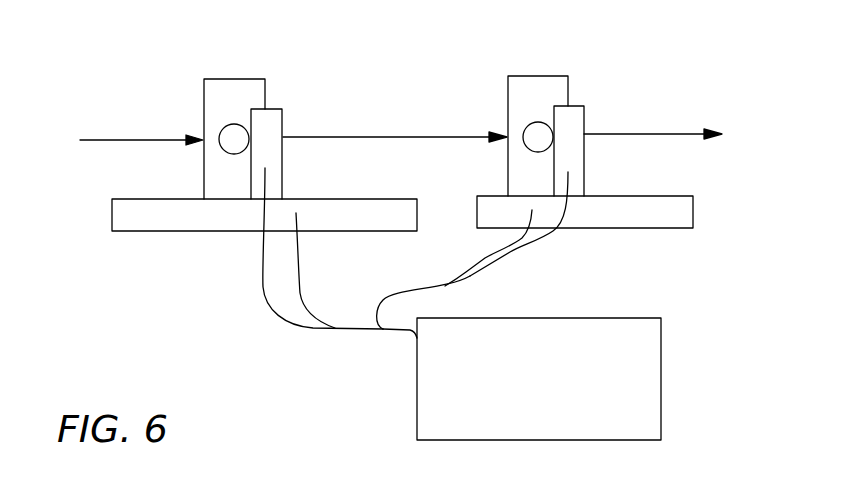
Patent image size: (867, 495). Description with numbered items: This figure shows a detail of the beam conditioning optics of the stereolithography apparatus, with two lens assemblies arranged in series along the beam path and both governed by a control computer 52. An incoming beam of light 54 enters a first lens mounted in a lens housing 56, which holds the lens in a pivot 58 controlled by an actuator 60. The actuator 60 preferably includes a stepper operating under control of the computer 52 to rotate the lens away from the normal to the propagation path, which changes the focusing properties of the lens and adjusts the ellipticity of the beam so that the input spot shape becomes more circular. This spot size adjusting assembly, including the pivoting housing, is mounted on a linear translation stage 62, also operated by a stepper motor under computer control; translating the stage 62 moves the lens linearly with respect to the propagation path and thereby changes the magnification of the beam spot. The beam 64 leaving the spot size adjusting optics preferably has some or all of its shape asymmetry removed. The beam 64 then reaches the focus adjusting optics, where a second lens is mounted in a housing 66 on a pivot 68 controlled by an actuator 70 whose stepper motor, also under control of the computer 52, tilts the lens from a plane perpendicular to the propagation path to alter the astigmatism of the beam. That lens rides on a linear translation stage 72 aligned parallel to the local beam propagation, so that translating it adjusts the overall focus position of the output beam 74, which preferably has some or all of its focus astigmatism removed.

The computer 52 is at (645, 427).
The beam of light 54 is at (127, 139).
The lens housing 56 is at (220, 105).
The pivot 58 is at (232, 138).
The actuator 60 is at (278, 115).
The linear translation stage 62 is at (173, 215).
The beam 64 is at (400, 136).
The housing 66 is at (523, 103).
The pivot 68 is at (535, 135).
The actuator 70 is at (580, 112).
The linear translation stage 72 is at (670, 208).
The beam 74 is at (677, 133).